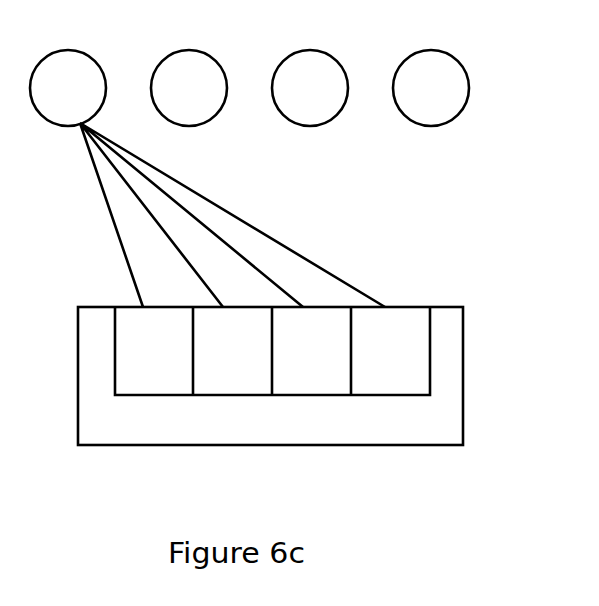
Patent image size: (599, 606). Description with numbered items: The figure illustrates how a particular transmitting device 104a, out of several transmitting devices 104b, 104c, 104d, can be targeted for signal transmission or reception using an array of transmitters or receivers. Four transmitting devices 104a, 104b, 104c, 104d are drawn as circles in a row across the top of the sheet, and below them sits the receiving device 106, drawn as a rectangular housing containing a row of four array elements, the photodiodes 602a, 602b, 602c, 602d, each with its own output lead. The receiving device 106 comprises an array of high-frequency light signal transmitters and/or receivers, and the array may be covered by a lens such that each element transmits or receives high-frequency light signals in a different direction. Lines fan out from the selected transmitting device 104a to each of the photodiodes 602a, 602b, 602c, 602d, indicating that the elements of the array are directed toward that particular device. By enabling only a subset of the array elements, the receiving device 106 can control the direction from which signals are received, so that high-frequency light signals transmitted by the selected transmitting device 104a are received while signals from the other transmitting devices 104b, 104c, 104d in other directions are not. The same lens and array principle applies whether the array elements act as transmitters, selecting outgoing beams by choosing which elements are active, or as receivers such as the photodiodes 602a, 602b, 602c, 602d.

The transmitting device 104a is at (105, 77).
The transmitting device 104b is at (228, 86).
The transmitting device 104c is at (347, 72).
The transmitting device 104d is at (468, 78).
The receiving device 106 is at (463, 307).
The photodiode 602a is at (138, 395).
The photodiode 602b is at (232, 395).
The photodiode 602c is at (305, 395).
The photodiode 602d is at (399, 395).